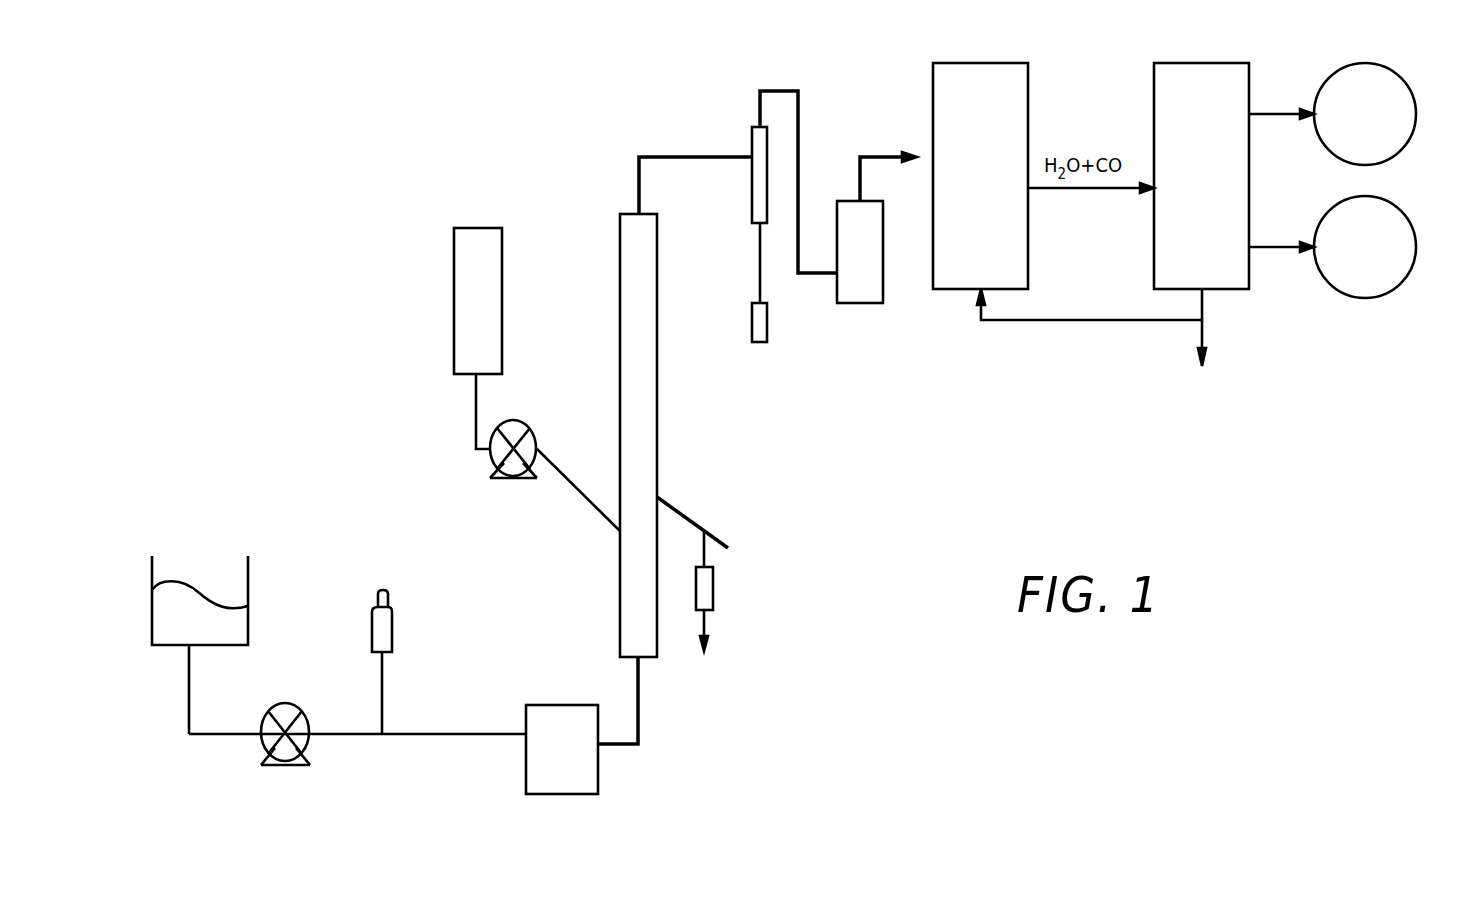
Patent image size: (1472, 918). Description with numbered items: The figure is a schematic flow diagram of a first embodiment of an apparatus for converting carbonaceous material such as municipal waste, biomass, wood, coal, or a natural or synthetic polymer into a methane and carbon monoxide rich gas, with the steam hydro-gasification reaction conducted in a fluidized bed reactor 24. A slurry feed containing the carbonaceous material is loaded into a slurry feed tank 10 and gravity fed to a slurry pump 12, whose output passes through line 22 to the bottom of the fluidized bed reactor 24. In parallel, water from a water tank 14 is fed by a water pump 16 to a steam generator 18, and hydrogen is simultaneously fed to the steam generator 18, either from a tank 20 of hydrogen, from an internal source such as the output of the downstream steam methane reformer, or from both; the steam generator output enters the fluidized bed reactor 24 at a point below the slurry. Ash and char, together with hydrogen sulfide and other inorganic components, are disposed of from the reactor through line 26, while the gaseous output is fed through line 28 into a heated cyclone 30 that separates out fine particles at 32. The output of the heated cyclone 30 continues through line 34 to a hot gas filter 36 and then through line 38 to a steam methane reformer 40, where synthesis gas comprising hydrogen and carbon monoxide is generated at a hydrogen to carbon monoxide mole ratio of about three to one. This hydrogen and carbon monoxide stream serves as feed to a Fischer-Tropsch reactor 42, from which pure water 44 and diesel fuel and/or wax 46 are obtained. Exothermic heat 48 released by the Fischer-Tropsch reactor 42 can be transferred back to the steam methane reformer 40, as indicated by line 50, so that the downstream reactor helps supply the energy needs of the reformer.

The slurry feed tank 10 is at (454, 298).
The slurry pump 12 is at (490, 463).
The water tank 14 is at (180, 630).
The water pump 16 is at (262, 748).
The steam generator 18 is at (545, 705).
The tank of hydrogen 20 is at (382, 590).
The line 22 is at (576, 494).
The fluidized bed reactor 24 is at (620, 302).
The line 26 is at (694, 518).
The line 28 is at (639, 168).
The heated cyclone 30 is at (752, 188).
The fine particles 32 is at (752, 325).
The line 34 is at (798, 108).
The hot gas filter 36 is at (848, 201).
The line 38 is at (872, 157).
The steam methane reformer 40 is at (1000, 63).
The Fischer-Tropsch reactor 42 is at (1220, 63).
The pure water 44 is at (1405, 207).
The diesel fuel and/or wax 46 is at (1405, 74).
The exothermic heat 48 is at (1210, 304).
The line 50 is at (1090, 320).